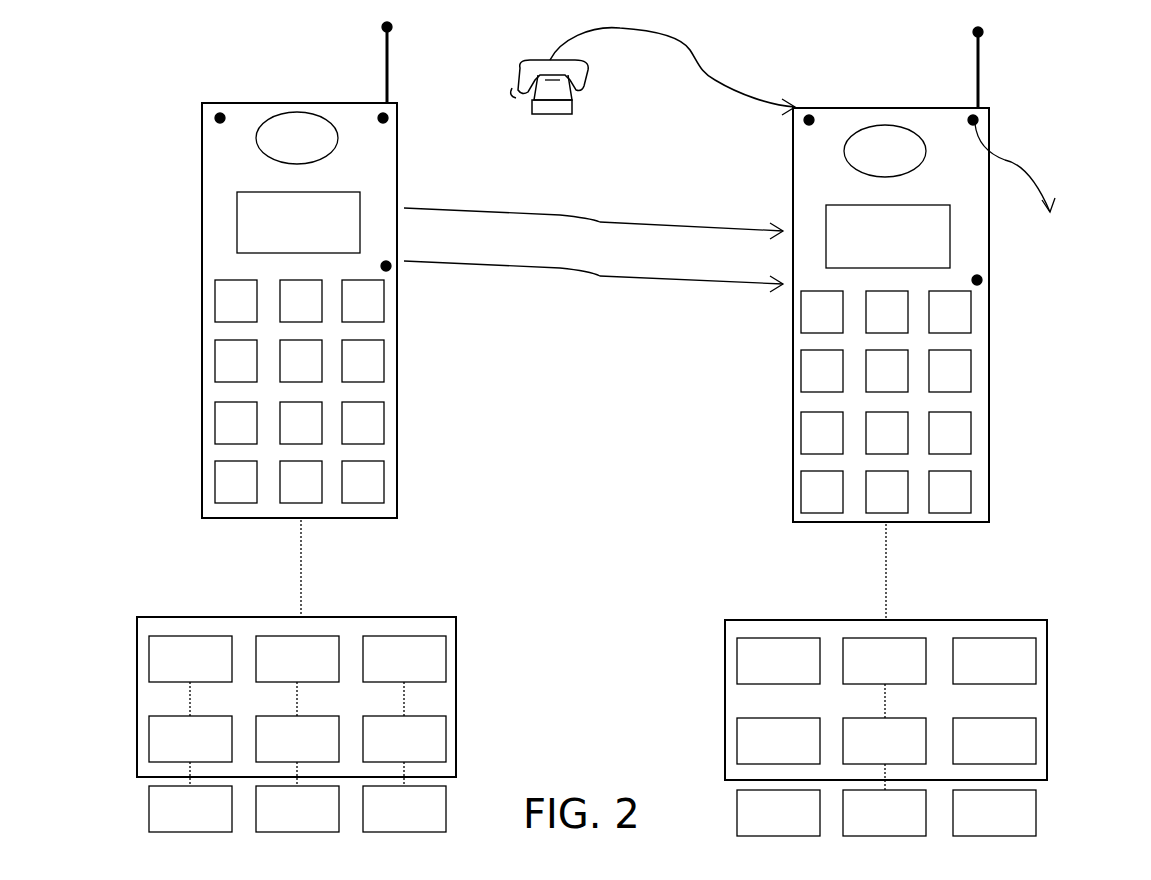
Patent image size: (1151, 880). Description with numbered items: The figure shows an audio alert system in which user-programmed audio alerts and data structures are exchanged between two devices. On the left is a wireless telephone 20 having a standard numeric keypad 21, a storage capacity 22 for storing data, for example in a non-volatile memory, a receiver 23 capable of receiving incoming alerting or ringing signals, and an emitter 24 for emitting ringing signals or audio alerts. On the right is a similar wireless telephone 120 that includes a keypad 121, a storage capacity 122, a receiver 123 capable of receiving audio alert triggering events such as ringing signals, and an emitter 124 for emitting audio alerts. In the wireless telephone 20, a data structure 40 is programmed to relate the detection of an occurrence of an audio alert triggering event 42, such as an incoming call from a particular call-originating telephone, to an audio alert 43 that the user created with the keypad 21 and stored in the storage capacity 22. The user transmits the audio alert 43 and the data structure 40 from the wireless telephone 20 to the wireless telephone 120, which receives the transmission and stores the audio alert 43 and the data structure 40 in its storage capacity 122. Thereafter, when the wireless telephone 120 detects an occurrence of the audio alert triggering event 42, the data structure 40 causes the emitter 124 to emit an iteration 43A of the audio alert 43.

The wireless telephone 20 is at (202, 217).
The numeric keypad 21 is at (384, 354).
The storage capacity 22 is at (137, 716).
The receiver 23 is at (215, 121).
The emitter 24 is at (388, 120).
The data structure 40 is at (590, 272).
The audio alert triggering event 42 is at (630, 28).
The audio alert 43 is at (590, 218).
The iteration of audio alert 43A is at (1022, 181).
The wireless telephone 120 is at (793, 357).
The keypad 121 is at (980, 367).
The storage capacity 122 is at (725, 716).
The receiver 123 is at (806, 122).
The emitter 124 is at (977, 122).